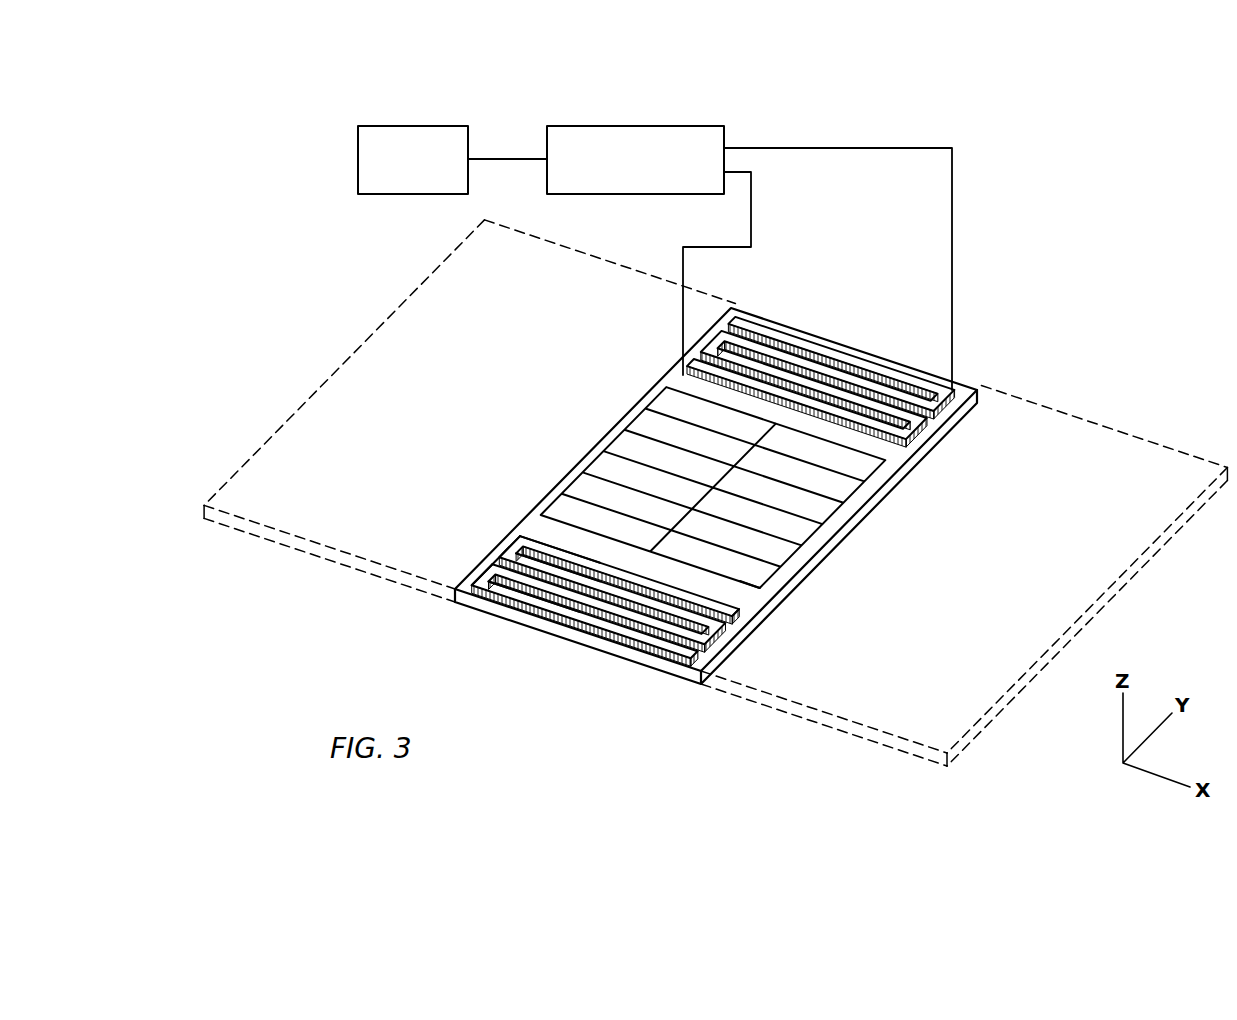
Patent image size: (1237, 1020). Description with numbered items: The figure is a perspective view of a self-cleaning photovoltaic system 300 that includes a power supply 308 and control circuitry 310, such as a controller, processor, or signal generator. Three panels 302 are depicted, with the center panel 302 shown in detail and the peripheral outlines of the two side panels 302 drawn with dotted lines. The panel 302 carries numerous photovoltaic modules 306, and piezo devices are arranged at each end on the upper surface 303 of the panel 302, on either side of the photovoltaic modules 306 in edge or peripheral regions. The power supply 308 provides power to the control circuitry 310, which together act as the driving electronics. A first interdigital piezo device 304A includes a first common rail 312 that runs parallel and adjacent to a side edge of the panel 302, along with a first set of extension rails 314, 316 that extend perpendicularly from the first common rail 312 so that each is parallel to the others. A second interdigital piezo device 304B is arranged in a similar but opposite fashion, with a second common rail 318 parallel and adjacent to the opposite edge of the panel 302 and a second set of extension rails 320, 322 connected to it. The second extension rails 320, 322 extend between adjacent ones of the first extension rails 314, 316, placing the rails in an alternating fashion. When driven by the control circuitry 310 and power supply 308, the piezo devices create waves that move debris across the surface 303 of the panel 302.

The self-cleaning photovoltaic system 300 is at (774, 496).
The panel 302 is at (335, 553).
The upper surface 303 is at (926, 439).
The first interdigital piezo device 304A is at (730, 637).
The second interdigital piezo device 304B is at (475, 587).
The photovoltaic modules 306 is at (742, 542).
The power supply 308 is at (357, 158).
The control circuitry 310 is at (634, 126).
The first common rail 312 is at (760, 591).
The extension rail 314 is at (566, 548).
The extension rail 316 is at (637, 634).
The second common rail 318 is at (512, 555).
The extension rail 320 is at (548, 575).
The extension rail 322 is at (552, 560).